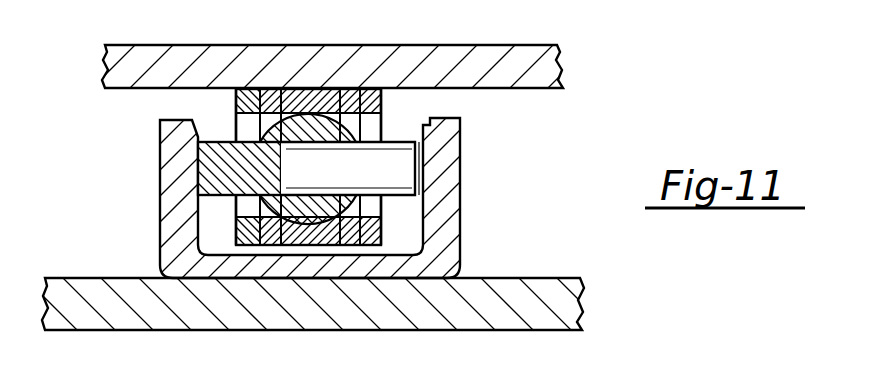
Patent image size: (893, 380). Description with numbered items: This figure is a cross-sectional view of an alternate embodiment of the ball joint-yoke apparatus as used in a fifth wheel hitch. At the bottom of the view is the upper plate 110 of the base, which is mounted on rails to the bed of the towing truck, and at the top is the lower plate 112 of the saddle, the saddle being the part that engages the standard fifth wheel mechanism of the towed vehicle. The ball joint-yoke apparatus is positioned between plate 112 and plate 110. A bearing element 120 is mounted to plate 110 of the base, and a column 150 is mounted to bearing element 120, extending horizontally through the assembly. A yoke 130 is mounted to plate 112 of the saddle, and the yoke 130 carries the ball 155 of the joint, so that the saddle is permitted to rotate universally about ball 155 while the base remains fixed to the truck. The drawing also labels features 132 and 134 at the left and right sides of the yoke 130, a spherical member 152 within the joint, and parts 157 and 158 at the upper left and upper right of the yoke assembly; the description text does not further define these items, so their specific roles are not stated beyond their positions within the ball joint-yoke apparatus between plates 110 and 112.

The upper plate 110 is at (555, 283).
The lower plate 112 is at (542, 63).
The bearing element 120 is at (168, 225).
The yoke 130 is at (236, 233).
The left sleeve wall 132 is at (235, 99).
The right sleeve wall 134 is at (386, 106).
The column 150 is at (403, 192).
The spherical bearing ball 152 is at (330, 120).
The ball 155 is at (286, 112).
The left retainer 157 is at (238, 108).
The right retainer 158 is at (374, 100).